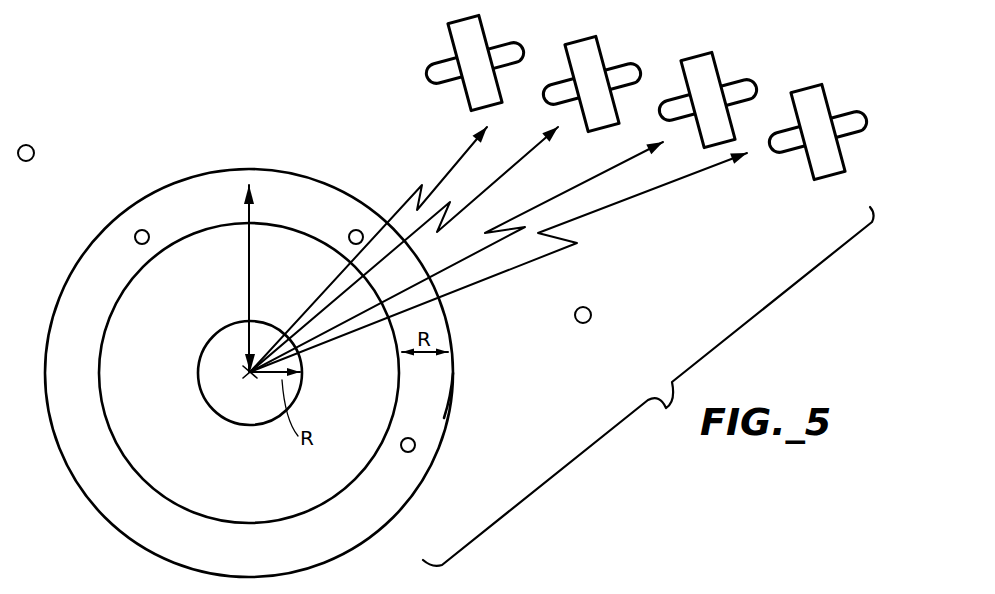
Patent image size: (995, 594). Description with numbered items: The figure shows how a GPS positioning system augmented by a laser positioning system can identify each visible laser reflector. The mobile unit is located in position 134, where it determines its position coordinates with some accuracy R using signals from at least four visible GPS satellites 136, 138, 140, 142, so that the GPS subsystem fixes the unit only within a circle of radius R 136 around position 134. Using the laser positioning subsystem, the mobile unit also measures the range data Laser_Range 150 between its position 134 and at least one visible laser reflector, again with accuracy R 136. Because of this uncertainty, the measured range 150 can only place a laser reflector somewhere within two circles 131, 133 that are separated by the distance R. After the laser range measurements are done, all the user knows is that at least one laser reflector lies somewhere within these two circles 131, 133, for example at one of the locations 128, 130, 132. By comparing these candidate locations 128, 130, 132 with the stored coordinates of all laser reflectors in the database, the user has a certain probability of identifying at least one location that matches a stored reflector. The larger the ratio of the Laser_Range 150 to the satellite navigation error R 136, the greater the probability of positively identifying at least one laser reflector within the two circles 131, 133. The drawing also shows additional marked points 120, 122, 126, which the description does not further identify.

The optical disk 120 is at (94, 543).
The laser spot at first position 122 is at (35, 150).
The laser spot at second position 126 is at (593, 313).
The laser reflector location 128 is at (136, 231).
The laser reflector location 130 is at (357, 229).
The inner circle 131 is at (391, 413).
The laser reflector location 132 is at (414, 439).
The outer circle 133 is at (455, 373).
The mobile unit position 134 is at (248, 381).
The GPS satellite 136 is at (492, 42).
The GPS satellite 138 is at (606, 60).
The GPS satellite 140 is at (720, 72).
The GPS satellite 142 is at (830, 98).
The Laser_Range 150 is at (246, 290).